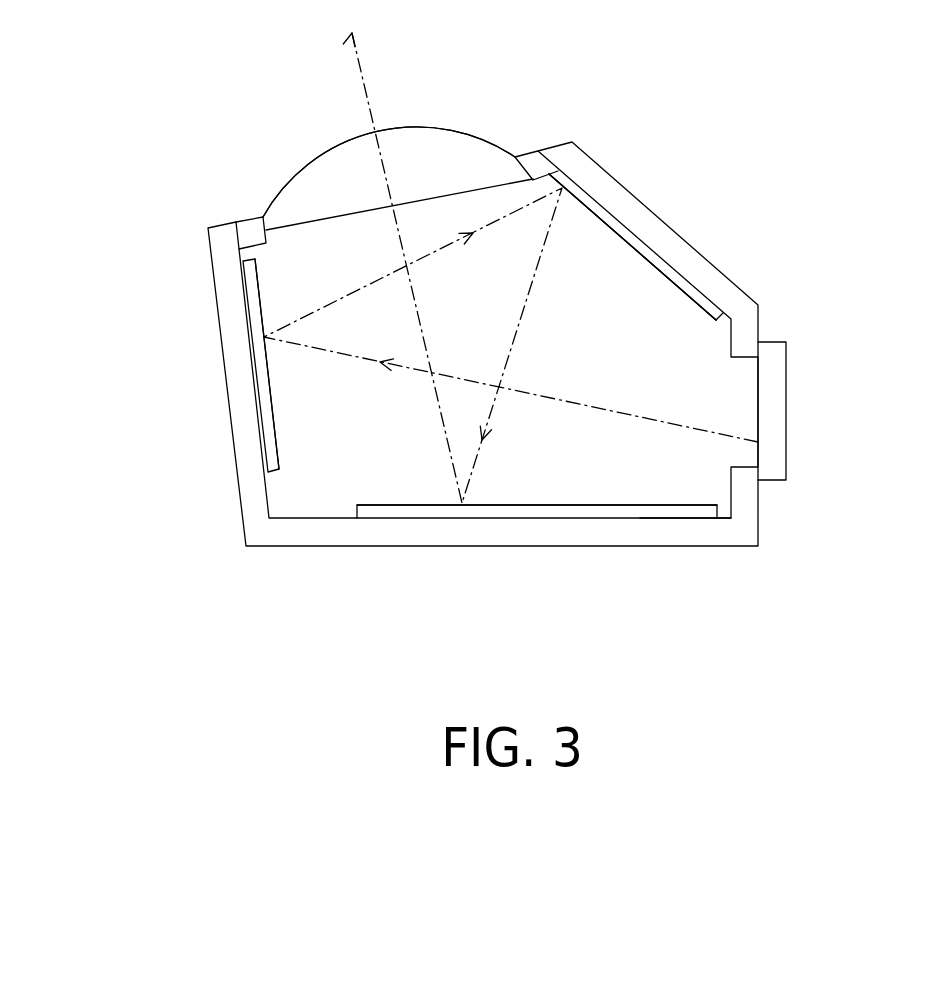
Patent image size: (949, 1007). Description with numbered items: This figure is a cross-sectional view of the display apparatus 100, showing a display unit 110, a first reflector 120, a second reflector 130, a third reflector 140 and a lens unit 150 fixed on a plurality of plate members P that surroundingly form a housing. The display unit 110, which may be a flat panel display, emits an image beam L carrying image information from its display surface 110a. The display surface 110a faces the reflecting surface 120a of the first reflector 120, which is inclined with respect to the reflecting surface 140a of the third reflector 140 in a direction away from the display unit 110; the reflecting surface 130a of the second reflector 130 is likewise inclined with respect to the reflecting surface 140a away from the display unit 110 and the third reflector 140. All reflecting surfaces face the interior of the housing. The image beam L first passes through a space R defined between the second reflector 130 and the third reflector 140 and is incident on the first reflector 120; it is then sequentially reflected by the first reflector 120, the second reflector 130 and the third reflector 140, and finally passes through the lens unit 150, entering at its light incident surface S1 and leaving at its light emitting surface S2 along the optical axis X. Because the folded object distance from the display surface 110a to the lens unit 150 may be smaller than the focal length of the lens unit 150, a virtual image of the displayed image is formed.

The display apparatus 100 is at (886, 632).
The display unit 110 is at (775, 440).
The display surface 110a is at (744, 426).
The first reflector 120 is at (268, 453).
The reflecting surface 120a is at (289, 417).
The second reflector 130 is at (650, 258).
The reflecting surface 130a is at (668, 304).
The third reflector 140 is at (490, 512).
The reflecting surface 140a is at (441, 490).
The lens unit 150 is at (328, 177).
The light incident surface S1 is at (558, 170).
The light emitting surface S2 is at (435, 128).
The optical axis X is at (371, 73).
The image beam L is at (565, 395).
The space R is at (651, 465).
The plate members P is at (250, 228).